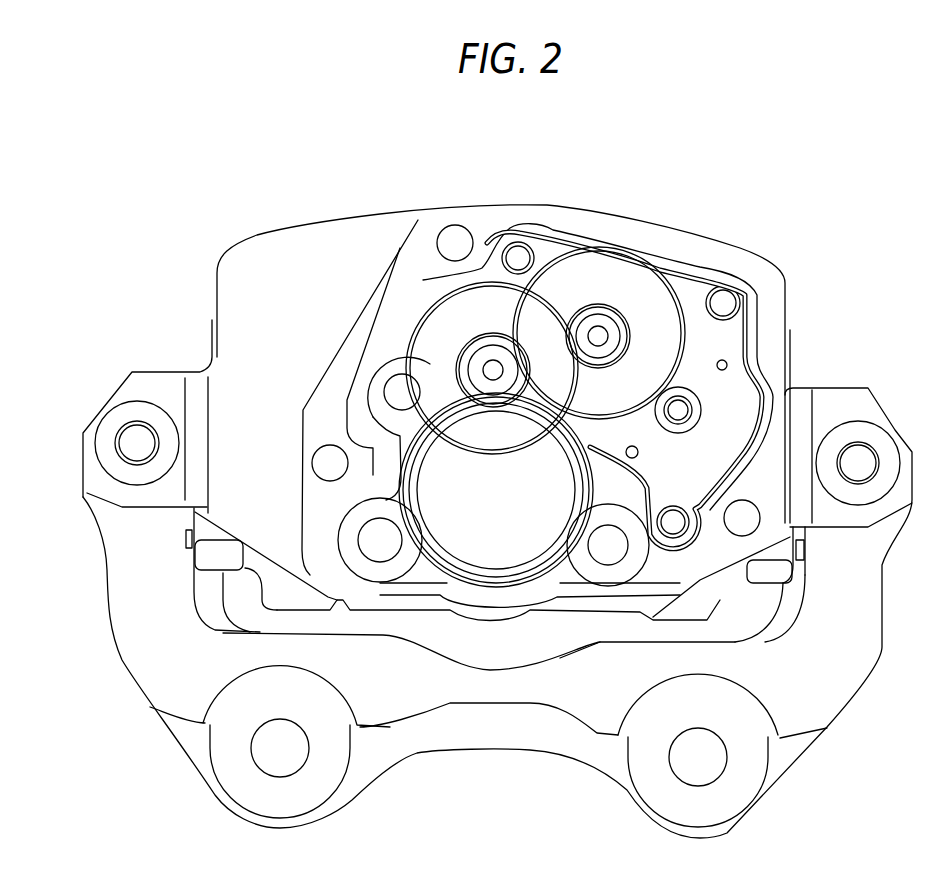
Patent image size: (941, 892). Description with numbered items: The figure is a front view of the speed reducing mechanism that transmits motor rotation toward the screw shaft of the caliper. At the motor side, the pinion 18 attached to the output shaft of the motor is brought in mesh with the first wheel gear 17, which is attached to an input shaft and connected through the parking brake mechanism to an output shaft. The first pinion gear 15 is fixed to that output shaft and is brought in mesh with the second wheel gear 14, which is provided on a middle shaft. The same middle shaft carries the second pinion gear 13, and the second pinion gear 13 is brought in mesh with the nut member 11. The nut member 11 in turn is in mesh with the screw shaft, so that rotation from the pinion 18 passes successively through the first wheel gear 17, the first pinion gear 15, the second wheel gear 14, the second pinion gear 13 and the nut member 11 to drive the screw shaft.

The nut member 11 is at (465, 547).
The second pinion gear 13 is at (466, 352).
The second wheel gear 14 is at (457, 347).
The first pinion gear 15 is at (618, 311).
The first wheel gear 17 is at (553, 255).
The pinion 18 is at (701, 392).